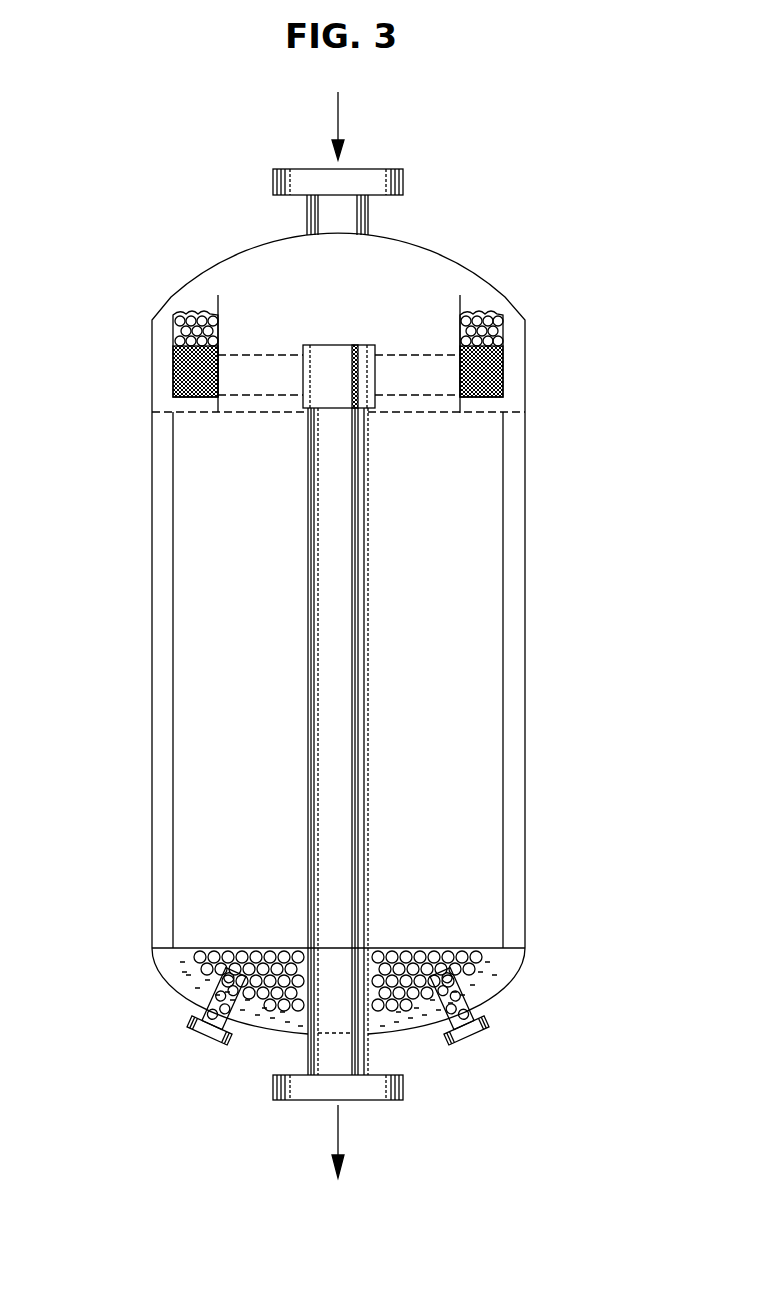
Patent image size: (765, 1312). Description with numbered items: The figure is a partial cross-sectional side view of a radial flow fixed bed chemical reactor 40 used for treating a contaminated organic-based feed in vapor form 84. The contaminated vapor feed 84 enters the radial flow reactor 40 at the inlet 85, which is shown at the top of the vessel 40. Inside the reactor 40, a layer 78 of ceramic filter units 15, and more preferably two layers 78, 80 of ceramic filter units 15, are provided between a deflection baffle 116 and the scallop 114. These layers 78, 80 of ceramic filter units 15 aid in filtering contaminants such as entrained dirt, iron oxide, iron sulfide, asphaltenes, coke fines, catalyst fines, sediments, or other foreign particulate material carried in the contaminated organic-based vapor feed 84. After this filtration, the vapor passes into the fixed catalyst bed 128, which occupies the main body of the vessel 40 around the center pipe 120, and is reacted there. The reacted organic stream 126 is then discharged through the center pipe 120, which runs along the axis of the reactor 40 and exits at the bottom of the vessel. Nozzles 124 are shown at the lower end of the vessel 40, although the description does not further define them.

The radial flow fixed bed chemical reactor 40 is at (508, 293).
The contaminated organic-based feed in vapor form 84 is at (340, 112).
The inlet 85 is at (298, 174).
The layer of ceramic filter units 78 is at (180, 318).
The ceramic filter unit 15 is at (178, 350).
The layer of ceramic filter units 80 is at (173, 411).
The deflection baffle 116 is at (459, 297).
The scallop 114 is at (504, 484).
The fixed catalyst bed 128 is at (210, 669).
The center pipe 120 is at (355, 643).
The nozzle 124 is at (205, 988).
The reacted organic stream 126 is at (340, 1128).